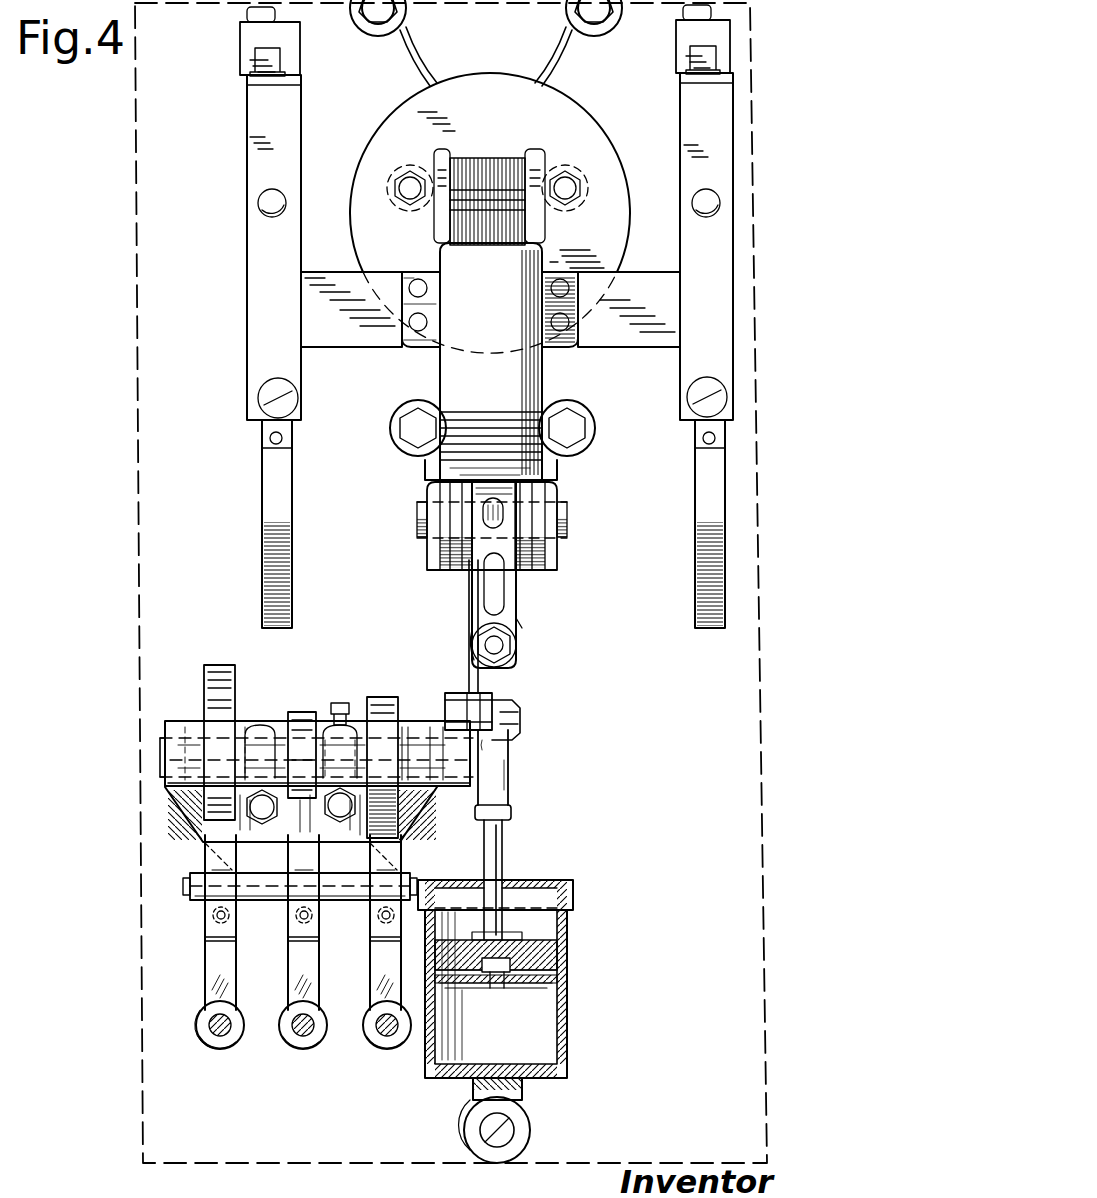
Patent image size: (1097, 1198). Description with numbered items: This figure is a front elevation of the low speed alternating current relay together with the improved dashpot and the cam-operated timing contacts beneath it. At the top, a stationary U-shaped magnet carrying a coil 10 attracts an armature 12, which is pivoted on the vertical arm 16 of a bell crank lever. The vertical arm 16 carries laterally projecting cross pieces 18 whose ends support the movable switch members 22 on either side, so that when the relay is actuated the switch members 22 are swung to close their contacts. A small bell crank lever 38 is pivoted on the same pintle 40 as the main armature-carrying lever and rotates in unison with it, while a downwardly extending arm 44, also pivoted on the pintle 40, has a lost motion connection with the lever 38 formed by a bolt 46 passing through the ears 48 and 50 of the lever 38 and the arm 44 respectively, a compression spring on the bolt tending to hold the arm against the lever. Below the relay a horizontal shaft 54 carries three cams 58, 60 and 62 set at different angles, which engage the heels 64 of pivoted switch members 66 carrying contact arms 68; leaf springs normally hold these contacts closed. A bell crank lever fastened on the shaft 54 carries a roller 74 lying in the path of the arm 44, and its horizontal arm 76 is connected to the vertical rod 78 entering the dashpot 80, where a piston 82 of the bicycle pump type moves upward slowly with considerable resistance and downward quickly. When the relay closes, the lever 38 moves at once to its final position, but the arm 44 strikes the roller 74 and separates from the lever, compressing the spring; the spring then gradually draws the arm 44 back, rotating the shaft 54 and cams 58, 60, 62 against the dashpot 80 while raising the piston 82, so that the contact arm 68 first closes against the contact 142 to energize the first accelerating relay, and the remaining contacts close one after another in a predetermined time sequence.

The coil 10 is at (568, 126).
The armature 12 is at (507, 226).
The vertical arm 16 is at (520, 388).
The cross pieces 18 is at (366, 344).
The movable switch member 22 is at (291, 256).
The small bell crank lever 38 is at (518, 588).
The pintle 40 is at (565, 516).
The downwardly extending arm 44 is at (469, 590).
The bolt 46 is at (507, 648).
The ear 48 is at (472, 638).
The ear 50 is at (522, 624).
The horizontal shaft 54 is at (160, 750).
The cam 58 is at (233, 702).
The cam 60 is at (302, 712).
The cam 62 is at (383, 700).
The heel 64 is at (375, 855).
The pivoted switch member 66 is at (328, 858).
The contact arm 68 is at (296, 1008).
The roller 74 is at (497, 694).
The horizontal arm 76 is at (490, 762).
The vertical rod 78 is at (502, 852).
The dashpot 80 is at (540, 922).
The piston 82 is at (545, 956).
The contact 142 is at (214, 1045).